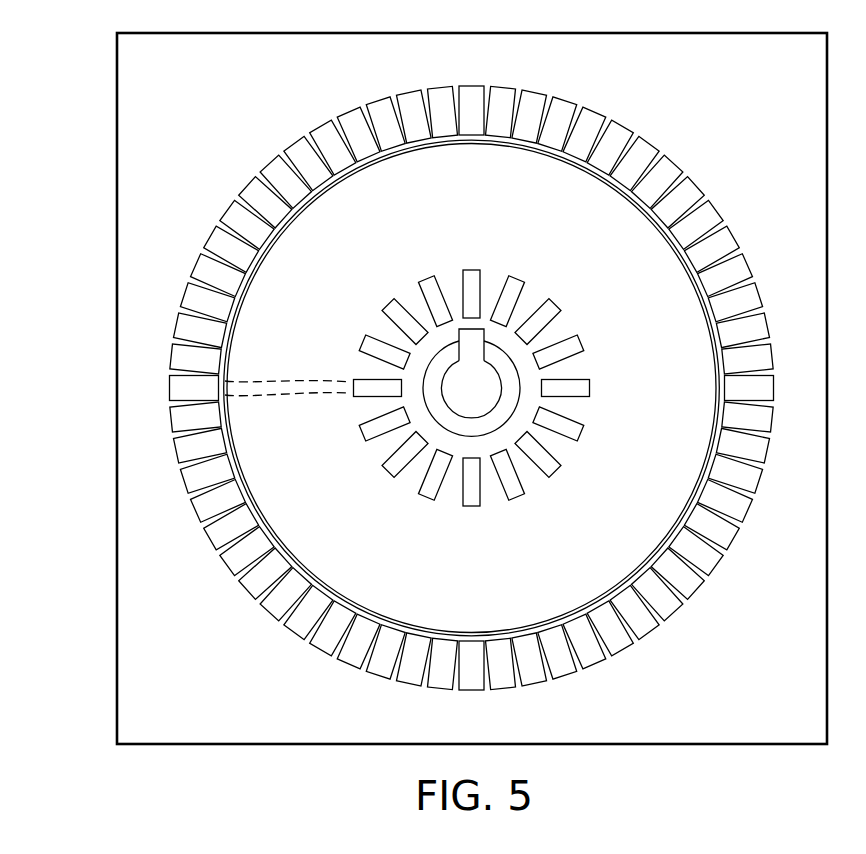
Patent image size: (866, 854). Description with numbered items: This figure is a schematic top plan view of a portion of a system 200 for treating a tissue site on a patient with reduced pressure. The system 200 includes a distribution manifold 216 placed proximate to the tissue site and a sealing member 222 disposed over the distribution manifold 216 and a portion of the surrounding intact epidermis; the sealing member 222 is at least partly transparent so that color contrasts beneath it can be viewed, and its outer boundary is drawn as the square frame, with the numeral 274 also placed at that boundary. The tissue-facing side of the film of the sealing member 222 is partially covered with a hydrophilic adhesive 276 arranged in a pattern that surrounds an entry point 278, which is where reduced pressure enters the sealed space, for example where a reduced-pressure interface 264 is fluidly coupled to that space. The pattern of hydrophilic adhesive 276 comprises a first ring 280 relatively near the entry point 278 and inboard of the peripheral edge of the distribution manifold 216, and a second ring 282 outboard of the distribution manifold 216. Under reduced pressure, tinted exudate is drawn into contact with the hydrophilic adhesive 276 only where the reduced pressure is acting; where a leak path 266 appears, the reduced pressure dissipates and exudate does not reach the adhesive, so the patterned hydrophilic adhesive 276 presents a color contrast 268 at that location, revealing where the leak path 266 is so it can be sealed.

The system 200 is at (770, 127).
The distribution manifold 216 is at (667, 345).
The sealing member 222 is at (693, 750).
The reduced-pressure interface 264 is at (458, 400).
The leak path 266 is at (282, 382).
The color contrast 268 is at (170, 385).
The housing wall 274 is at (472, 425).
The hydrophilic adhesive 276 is at (292, 150).
The entry point 278 is at (424, 422).
The first ring 280 is at (590, 443).
The second ring 282 is at (410, 388).